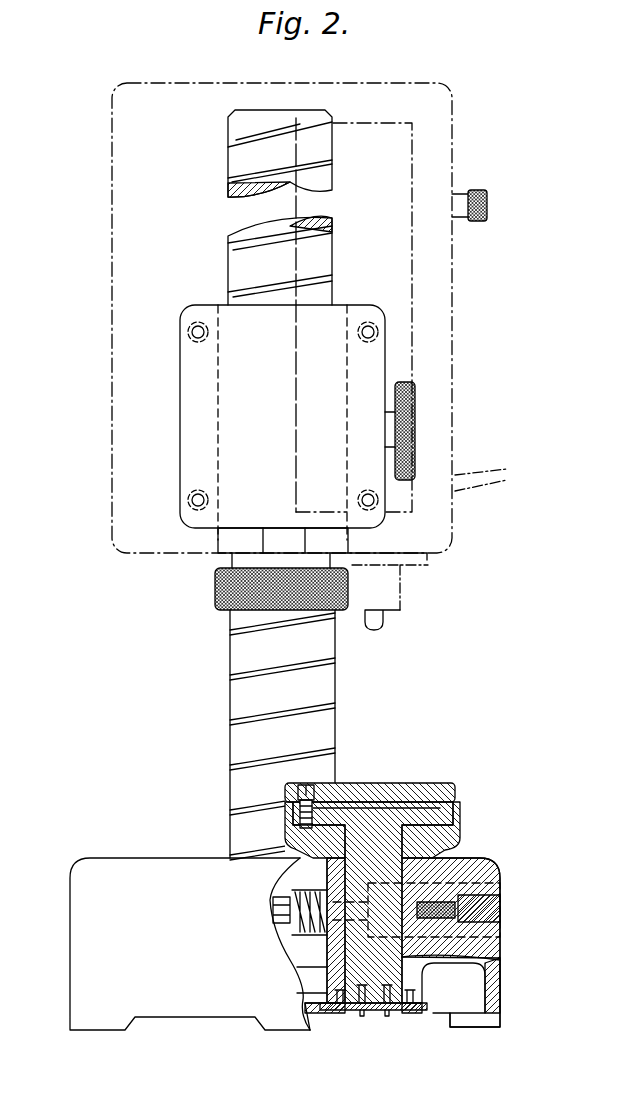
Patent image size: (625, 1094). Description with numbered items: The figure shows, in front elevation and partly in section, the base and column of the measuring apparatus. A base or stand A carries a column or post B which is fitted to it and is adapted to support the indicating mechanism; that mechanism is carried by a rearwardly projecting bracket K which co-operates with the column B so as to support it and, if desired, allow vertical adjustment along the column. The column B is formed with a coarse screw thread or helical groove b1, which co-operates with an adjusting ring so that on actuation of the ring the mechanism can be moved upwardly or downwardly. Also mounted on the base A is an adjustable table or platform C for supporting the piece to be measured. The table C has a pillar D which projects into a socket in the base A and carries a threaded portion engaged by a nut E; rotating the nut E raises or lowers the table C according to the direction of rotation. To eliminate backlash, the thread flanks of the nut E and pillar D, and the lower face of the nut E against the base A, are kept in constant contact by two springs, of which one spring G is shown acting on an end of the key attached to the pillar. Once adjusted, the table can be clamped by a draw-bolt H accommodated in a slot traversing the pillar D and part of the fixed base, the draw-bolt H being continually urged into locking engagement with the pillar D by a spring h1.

The rearwardly projecting bracket K is at (200, 412).
The coarse screw thread or helical groove b1 is at (330, 663).
The column or post B is at (320, 732).
The adjustable table or platform C is at (373, 800).
The nut E is at (458, 838).
The base or stand A is at (85, 902).
The pillar D is at (480, 957).
The draw-bolt H is at (437, 890).
The spring h1 is at (293, 879).
The spring G is at (397, 1005).